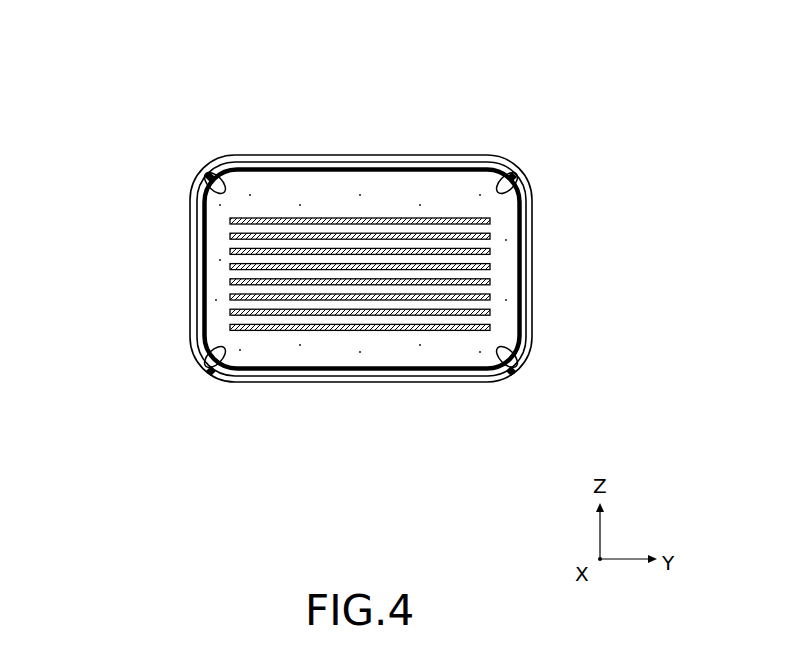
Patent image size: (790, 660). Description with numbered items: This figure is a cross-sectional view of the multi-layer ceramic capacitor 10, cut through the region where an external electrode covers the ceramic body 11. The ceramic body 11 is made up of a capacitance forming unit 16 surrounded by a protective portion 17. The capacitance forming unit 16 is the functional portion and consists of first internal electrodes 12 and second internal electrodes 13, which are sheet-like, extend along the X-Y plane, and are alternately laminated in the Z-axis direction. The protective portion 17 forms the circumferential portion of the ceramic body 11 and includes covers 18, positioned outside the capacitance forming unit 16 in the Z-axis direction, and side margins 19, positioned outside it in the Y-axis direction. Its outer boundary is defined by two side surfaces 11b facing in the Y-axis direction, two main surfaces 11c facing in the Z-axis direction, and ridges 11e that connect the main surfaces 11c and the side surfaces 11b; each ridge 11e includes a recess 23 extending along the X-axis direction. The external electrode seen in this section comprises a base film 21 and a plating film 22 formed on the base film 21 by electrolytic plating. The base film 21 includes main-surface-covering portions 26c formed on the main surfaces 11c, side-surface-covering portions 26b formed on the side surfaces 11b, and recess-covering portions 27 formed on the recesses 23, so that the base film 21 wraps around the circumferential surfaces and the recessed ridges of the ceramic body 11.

The multi-layer ceramic capacitor 10 is at (214, 57).
The ceramic body 11 is at (361, 166).
The side surfaces 11b is at (528, 204).
The main surfaces 11c is at (461, 162).
The ridges 11e is at (206, 173).
The first internal electrodes 12 is at (313, 312).
The second internal electrodes 13 is at (433, 326).
The capacitance forming unit 16 is at (359, 220).
The protective portion 17 is at (131, 249).
The covers 18 is at (458, 194).
The side margins 19 is at (493, 267).
The base film 21 is at (359, 275).
The plating film 22 is at (200, 203).
The recess 23 is at (361, 274).
The side-surface-covering portions 26b is at (198, 224).
The main-surface-covering portions 26c is at (275, 165).
The recess-covering portions 27 is at (204, 190).